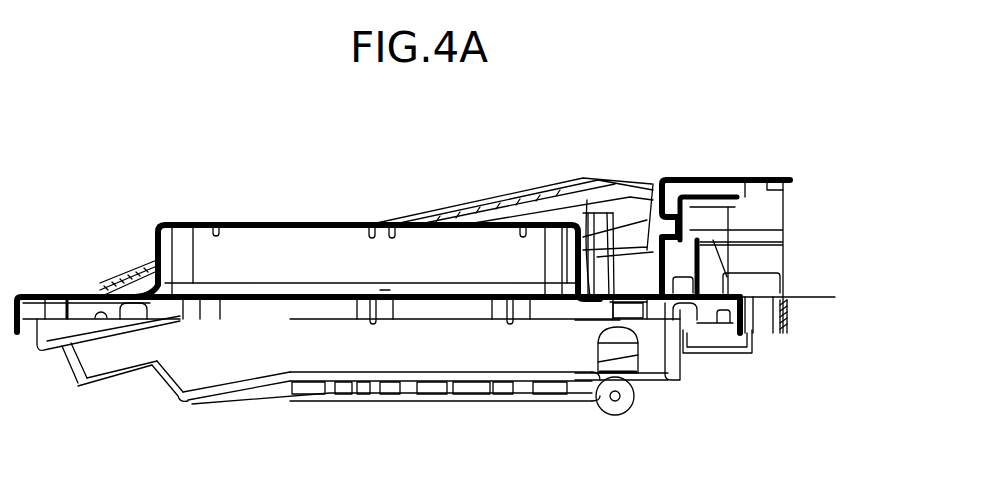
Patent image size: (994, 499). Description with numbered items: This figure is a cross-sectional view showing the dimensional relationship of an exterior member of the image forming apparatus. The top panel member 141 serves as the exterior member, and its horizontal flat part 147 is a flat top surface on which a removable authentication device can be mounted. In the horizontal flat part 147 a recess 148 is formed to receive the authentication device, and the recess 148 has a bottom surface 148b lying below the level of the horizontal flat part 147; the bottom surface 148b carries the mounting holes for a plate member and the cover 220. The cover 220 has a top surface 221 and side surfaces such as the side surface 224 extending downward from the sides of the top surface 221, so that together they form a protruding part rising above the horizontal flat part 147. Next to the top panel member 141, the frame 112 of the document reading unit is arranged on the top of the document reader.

The frame 112 is at (706, 178).
The top panel member 141 is at (639, 275).
The horizontal flat part 147 is at (92, 283).
The recess 148 is at (484, 290).
The bottom surface 148b is at (383, 295).
The cover 220 is at (362, 222).
The top surface 221 is at (157, 253).
The side surface 224 is at (587, 200).